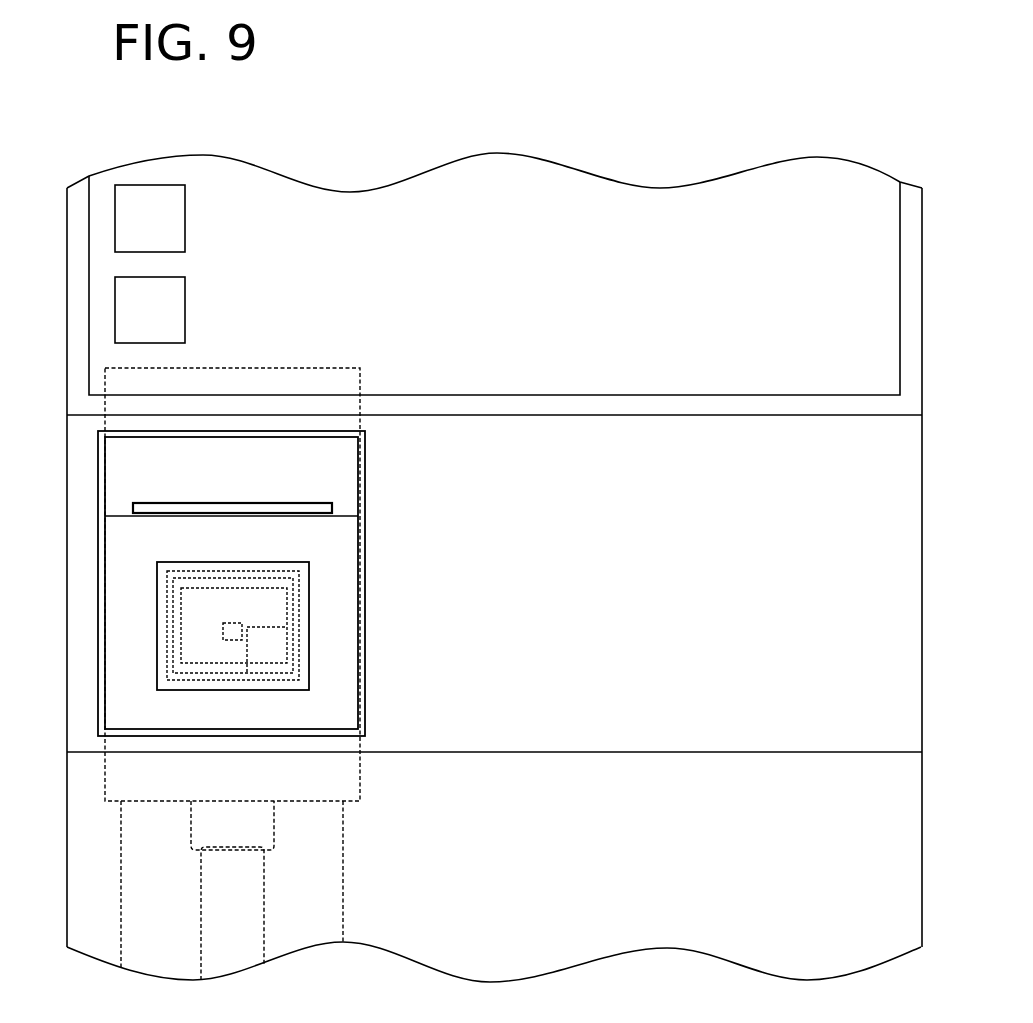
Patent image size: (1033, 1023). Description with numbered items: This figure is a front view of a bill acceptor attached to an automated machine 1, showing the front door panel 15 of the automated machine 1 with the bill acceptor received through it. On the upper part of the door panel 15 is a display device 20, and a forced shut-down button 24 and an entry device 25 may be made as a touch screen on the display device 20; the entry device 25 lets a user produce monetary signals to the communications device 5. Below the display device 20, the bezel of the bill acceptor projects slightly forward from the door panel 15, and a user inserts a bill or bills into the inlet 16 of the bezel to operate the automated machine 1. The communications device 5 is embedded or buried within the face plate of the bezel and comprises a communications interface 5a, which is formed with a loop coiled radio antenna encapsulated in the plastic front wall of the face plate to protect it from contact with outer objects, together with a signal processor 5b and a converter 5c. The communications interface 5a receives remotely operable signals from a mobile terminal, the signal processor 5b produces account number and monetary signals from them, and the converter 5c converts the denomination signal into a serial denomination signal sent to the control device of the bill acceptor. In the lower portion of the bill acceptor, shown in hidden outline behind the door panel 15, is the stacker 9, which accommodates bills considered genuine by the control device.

The automated machine 1 is at (45, 298).
The communications device 5 is at (290, 557).
The communications interface 5a is at (185, 573).
The signal processor 5b is at (242, 623).
The converter 5c is at (228, 634).
The stacker 9 is at (357, 890).
The door panel 15 is at (612, 600).
The inlet 16 is at (238, 512).
The display device 20 is at (612, 328).
The forced shut-down button 24 is at (170, 234).
The entry device 25 is at (170, 326).